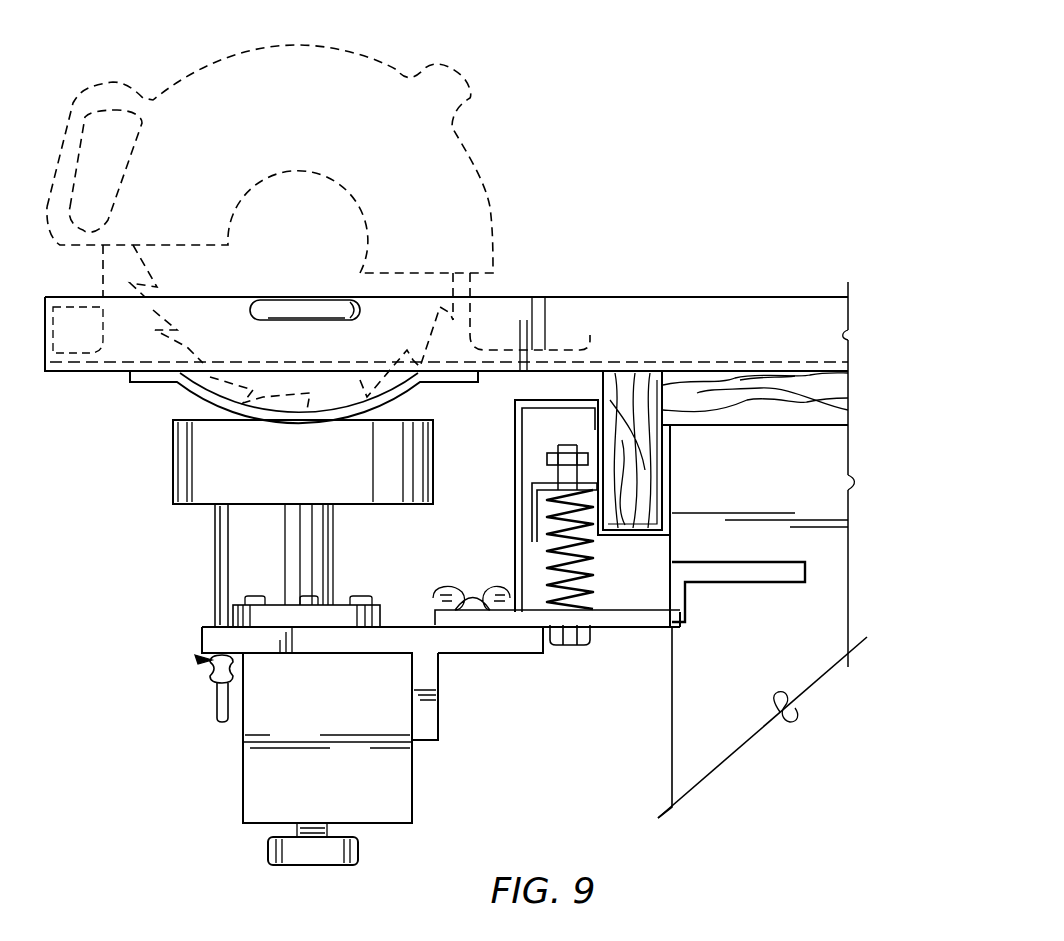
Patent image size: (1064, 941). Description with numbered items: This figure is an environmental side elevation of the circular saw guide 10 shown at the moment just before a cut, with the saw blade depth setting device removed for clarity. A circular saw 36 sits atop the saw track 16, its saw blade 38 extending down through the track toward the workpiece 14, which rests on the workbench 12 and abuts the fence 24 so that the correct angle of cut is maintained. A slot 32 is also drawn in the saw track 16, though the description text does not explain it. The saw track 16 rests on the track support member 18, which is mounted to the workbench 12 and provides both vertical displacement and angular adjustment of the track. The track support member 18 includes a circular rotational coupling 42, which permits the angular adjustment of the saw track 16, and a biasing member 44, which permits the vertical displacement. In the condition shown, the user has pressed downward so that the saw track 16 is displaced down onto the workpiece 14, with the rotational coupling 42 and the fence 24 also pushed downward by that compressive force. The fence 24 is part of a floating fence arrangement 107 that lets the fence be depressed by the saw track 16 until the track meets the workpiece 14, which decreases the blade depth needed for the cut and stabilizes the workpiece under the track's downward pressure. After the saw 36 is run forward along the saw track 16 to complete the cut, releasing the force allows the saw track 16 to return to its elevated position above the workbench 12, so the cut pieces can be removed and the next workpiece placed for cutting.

The circular saw guide 10 is at (638, 158).
The workbench 12 is at (737, 548).
The workpiece 14 is at (768, 415).
The saw track 16 is at (665, 287).
The track support member 18 is at (132, 625).
The fence 24 is at (658, 458).
The slot 32 is at (270, 302).
The circular saw 36 is at (352, 67).
The saw blade 38 is at (185, 343).
The rotational coupling 42 is at (150, 455).
The biasing member 44 is at (215, 800).
The floating fence arrangement 107 is at (602, 592).